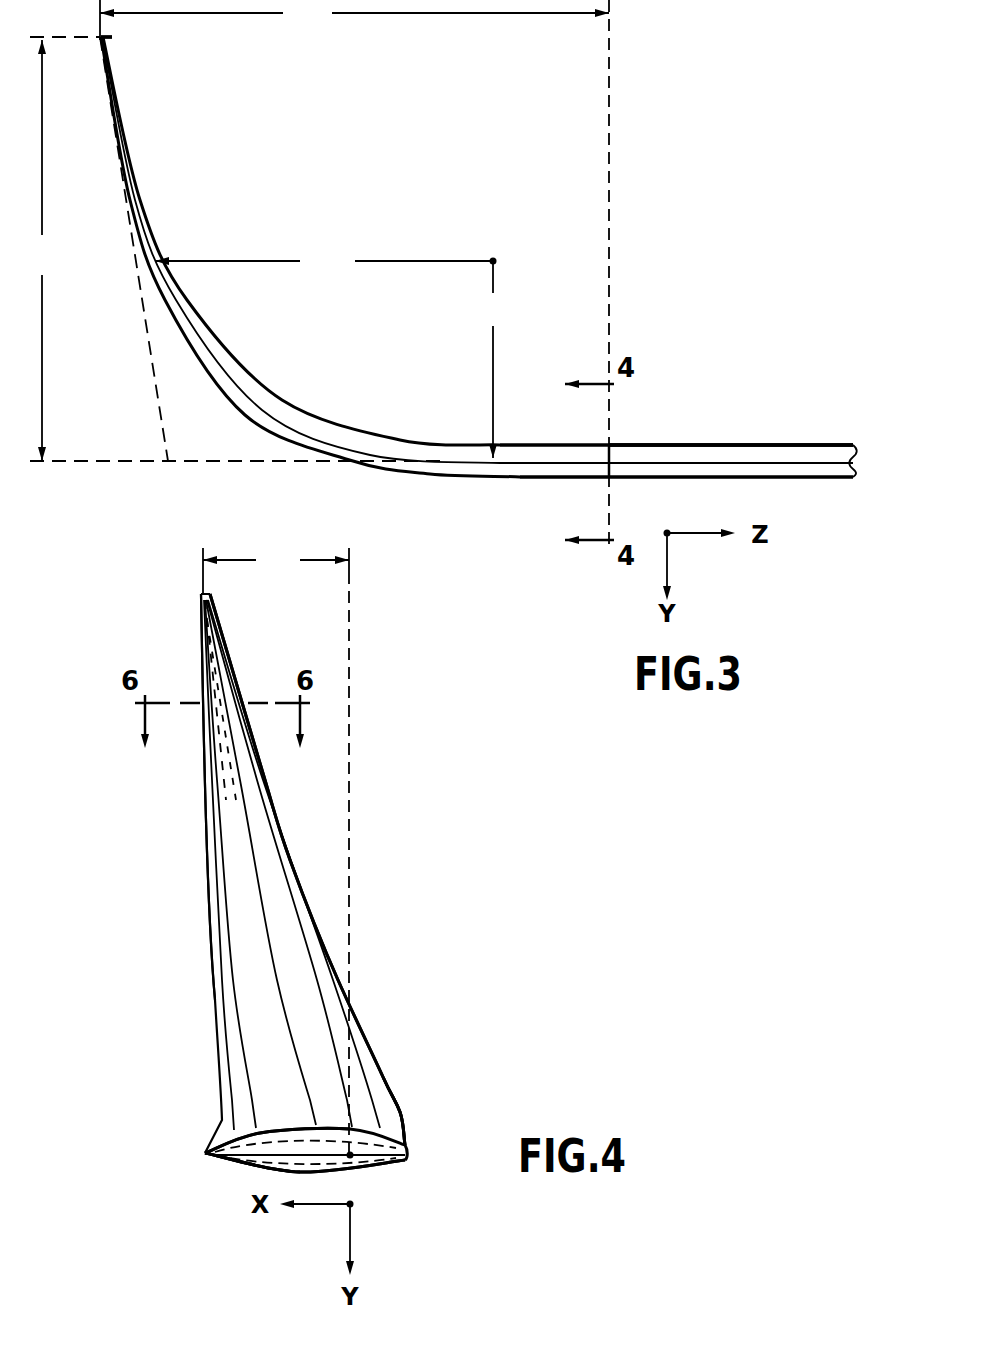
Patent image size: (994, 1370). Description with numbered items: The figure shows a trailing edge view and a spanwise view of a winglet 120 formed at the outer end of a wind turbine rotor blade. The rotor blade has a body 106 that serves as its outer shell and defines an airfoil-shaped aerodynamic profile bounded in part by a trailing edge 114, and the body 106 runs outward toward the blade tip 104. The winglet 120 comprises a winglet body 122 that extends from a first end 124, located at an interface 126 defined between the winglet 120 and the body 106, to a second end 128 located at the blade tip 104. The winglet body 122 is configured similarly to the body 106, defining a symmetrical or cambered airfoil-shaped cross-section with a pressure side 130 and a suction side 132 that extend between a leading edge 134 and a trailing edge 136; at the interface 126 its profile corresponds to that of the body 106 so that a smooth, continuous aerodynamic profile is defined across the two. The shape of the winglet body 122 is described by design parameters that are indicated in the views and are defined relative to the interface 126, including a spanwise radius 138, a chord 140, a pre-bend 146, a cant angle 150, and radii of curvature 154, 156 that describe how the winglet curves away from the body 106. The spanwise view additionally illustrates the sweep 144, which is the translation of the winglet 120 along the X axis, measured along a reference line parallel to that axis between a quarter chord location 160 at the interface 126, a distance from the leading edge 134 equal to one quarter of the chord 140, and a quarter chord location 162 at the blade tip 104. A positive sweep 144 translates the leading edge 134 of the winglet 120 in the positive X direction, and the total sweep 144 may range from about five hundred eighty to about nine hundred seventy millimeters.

In FIG. 3, the blade tip 104 is at (112, 38).
In FIG. 4, the blade tip 104 is at (201, 593).
In FIG. 3, the second end 128 is at (180, 68).
In FIG. 4, the second end 128 is at (201, 593).
In FIG. 3, the body 106 is at (828, 445).
In FIG. 3, the trailing edge 114 is at (835, 465).
In FIG. 3, the winglet 120 is at (686, 108).
In FIG. 4, the winglet 120 is at (443, 834).
In FIG. 3, the winglet body 122 is at (282, 402).
In FIG. 4, the winglet body 122 is at (243, 975).
In FIG. 3, the first end 124 is at (612, 450).
In FIG. 4, the first end 124 is at (392, 1133).
In FIG. 3, the interface 126 is at (612, 450).
In FIG. 4, the interface 126 is at (392, 1133).
In FIG. 3, the pressure side 130 is at (550, 445).
In FIG. 4, the pressure side 130 is at (292, 1119).
In FIG. 3, the suction side 132 is at (533, 478).
In FIG. 4, the suction side 132 is at (323, 1173).
In FIG. 4, the leading edge 134 is at (280, 825).
In FIG. 3, the trailing edge 136 is at (522, 463).
In FIG. 4, the trailing edge 136 is at (209, 862).
In FIG. 3, the spanwise radius 138 is at (354, 14).
In FIG. 4, the chord 140 is at (280, 1166).
In FIG. 4, the sweep 144 is at (276, 560).
In FIG. 3, the pre-bend 146 is at (42, 250).
In FIG. 3, the cant angle 150 is at (152, 366).
In FIG. 3, the radius of curvature 154 is at (326, 261).
In FIG. 3, the radius of curvature 156 is at (493, 359).
In FIG. 4, the quarter chord location 160 is at (382, 1170).
In FIG. 4, the quarter chord location 162 is at (197, 552).